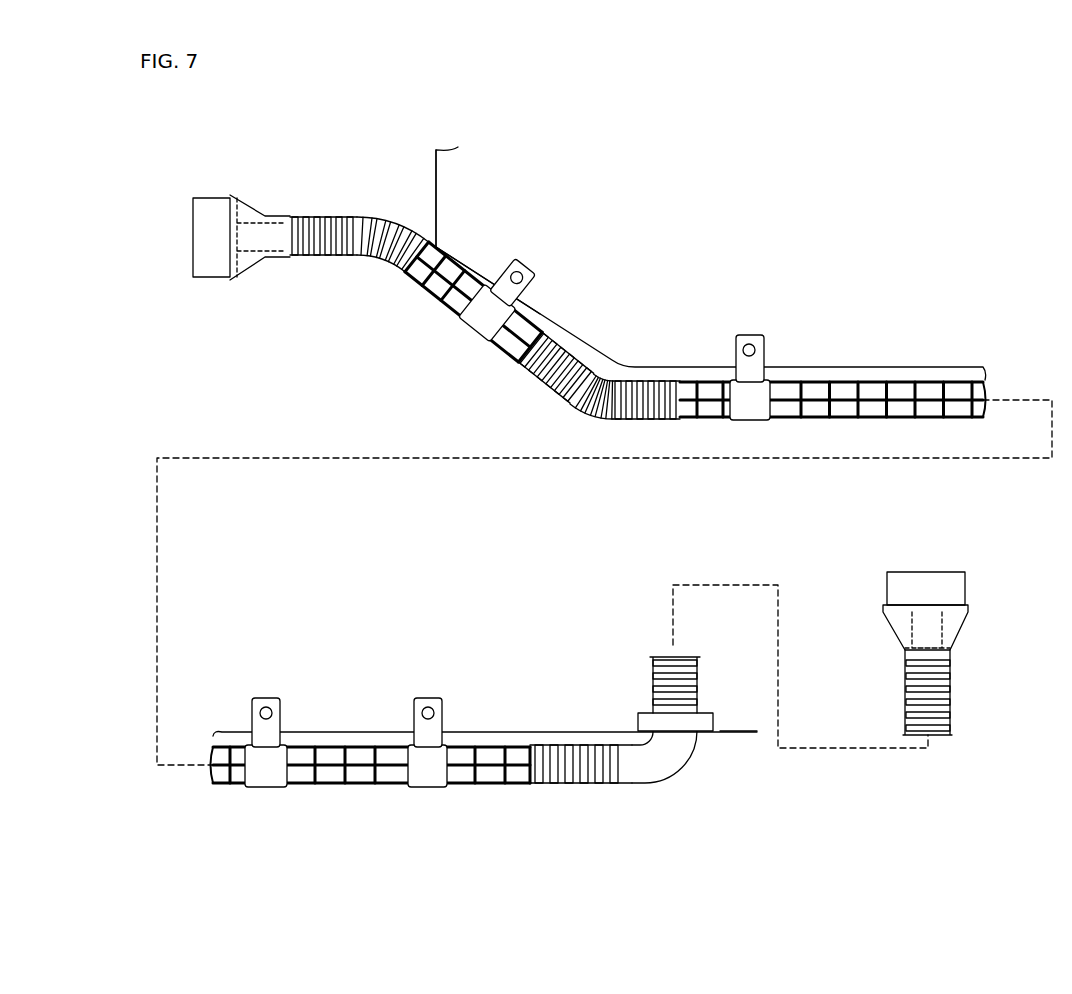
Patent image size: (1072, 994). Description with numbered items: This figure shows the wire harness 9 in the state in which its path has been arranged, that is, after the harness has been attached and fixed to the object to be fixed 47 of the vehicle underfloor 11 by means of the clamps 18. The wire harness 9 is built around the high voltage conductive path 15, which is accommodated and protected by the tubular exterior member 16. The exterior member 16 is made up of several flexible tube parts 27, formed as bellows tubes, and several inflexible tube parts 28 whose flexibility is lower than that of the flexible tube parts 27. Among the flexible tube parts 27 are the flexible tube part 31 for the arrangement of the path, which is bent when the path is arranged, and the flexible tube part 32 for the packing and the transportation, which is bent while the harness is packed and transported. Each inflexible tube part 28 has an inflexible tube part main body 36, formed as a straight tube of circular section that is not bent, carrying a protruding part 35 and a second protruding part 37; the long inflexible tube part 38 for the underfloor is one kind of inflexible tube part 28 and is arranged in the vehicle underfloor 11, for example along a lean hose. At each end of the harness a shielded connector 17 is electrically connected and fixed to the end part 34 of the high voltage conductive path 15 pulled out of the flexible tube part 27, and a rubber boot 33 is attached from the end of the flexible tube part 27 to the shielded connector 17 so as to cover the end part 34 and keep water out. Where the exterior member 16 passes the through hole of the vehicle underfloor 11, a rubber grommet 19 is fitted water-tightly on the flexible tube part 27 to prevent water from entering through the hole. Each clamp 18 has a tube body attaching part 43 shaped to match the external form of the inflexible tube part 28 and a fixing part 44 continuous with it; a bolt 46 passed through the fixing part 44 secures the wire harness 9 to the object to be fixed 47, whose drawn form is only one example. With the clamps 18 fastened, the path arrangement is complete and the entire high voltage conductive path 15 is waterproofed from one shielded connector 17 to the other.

The wire harness 9 is at (444, 372).
The vehicle underfloor 11 is at (985, 366).
The high voltage conductive path 15 is at (658, 591).
The exterior member 16 is at (598, 582).
The shielded connector 17 is at (212, 266).
The clamp 18 is at (525, 538).
The grommet 19 is at (706, 732).
The flexible tube part 27 is at (672, 502).
The inflexible tube part 28 is at (624, 546).
The flexible tube part for the arrangement of the path 31 is at (672, 502).
The flexible tube part for the packing and the transportation 32 is at (345, 215).
The boot 33 is at (257, 210).
The end part 34 is at (258, 266).
The protruding part 35 is at (598, 494).
The inflexible tube part main body 36 is at (598, 511).
The second protruding part 37 is at (601, 512).
The inflexible tube part for the underfloor 38 is at (598, 527).
The tube body attaching part 43 is at (772, 399).
The fixing part 44 is at (760, 378).
The bolt 46 is at (506, 270).
The object to be fixed 47 is at (447, 226).